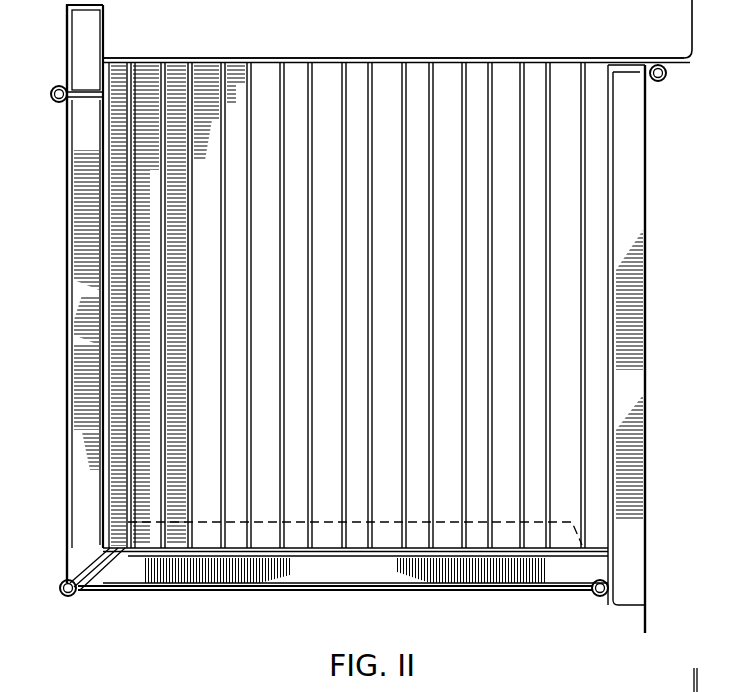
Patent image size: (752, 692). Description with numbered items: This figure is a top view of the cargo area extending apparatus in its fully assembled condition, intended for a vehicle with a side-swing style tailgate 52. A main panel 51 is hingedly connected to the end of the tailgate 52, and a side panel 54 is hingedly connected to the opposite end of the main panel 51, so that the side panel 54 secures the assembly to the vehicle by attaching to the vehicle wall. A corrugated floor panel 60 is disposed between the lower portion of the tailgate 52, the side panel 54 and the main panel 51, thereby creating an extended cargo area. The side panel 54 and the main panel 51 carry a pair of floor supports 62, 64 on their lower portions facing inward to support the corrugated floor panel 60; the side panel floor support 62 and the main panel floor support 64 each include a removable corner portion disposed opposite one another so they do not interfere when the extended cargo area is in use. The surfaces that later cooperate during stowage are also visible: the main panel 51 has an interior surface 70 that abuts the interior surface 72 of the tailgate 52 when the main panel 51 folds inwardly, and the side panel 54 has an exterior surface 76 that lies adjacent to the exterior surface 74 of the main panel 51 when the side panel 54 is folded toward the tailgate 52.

The main panel 51 is at (280, 580).
The tailgate 52 is at (630, 160).
The side panel 54 is at (80, 517).
The corrugated floor panel 60 is at (460, 117).
The side panel floor support 62 is at (118, 57).
The main panel floor support 64 is at (577, 543).
The interior surface of main panel 70 is at (509, 537).
The interior surface of tailgate 72 is at (604, 350).
The exterior surface of main panel 74 is at (128, 597).
The exterior surface of side panel 76 is at (58, 256).